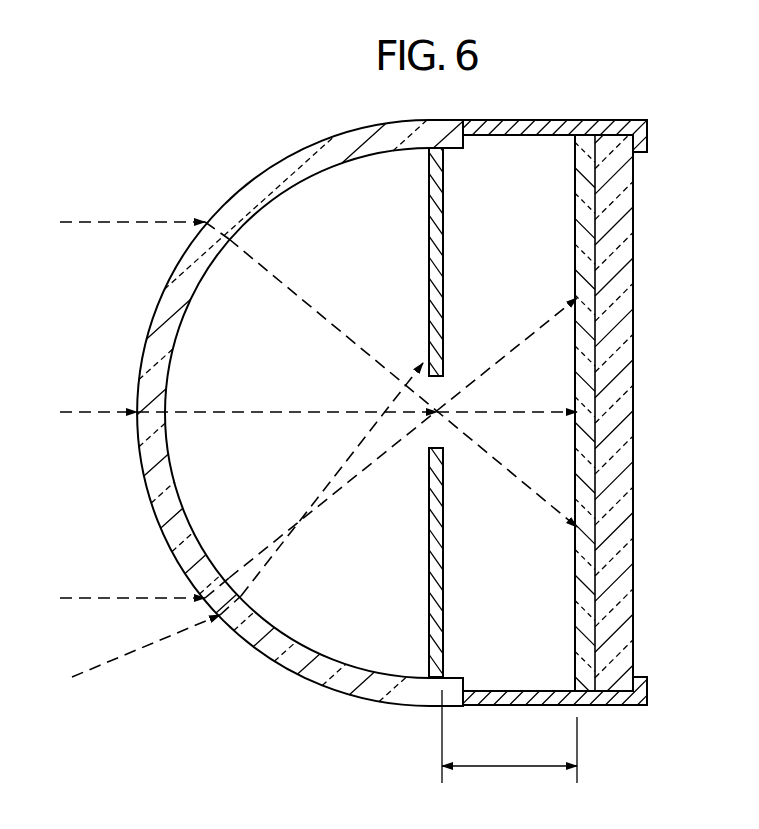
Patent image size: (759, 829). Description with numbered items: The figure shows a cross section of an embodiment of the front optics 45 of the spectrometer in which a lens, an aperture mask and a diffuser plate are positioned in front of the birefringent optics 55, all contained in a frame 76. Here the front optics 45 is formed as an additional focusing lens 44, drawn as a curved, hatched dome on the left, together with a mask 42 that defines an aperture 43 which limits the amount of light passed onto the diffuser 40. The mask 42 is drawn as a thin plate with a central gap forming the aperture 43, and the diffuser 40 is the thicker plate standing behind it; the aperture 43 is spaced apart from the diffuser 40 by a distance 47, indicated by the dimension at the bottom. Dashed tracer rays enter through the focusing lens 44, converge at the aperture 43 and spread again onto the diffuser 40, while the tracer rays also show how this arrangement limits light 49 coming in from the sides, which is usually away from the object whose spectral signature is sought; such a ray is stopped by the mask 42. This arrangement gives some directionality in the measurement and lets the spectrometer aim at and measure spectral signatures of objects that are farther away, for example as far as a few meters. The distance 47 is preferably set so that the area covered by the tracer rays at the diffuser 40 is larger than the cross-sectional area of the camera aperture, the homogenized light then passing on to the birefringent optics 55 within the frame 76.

The diffuser 40 is at (577, 598).
The mask 42 is at (443, 557).
The aperture 43 is at (445, 388).
The focusing lens 44 is at (152, 392).
The front optics 45 is at (260, 383).
The distance 47 is at (509, 736).
The light coming in from the sides 49 is at (173, 635).
The birefringent optics 55 is at (596, 365).
The frame 76 is at (537, 120).